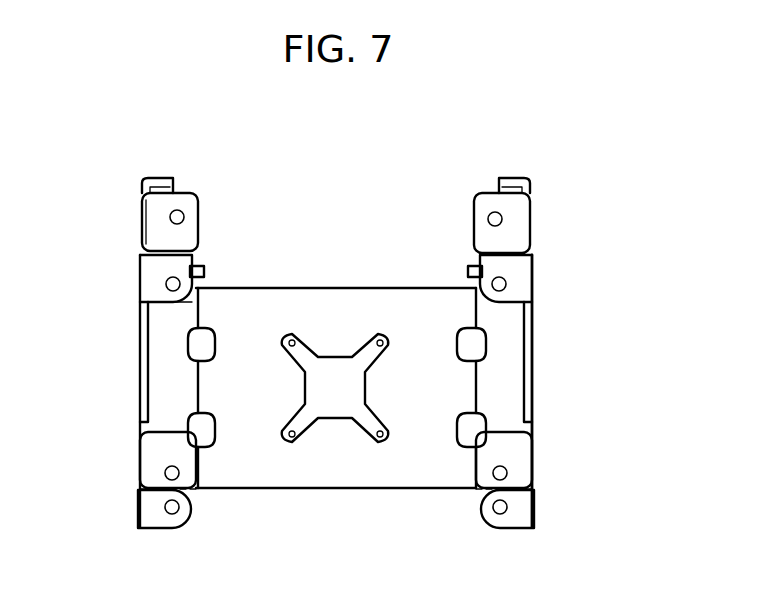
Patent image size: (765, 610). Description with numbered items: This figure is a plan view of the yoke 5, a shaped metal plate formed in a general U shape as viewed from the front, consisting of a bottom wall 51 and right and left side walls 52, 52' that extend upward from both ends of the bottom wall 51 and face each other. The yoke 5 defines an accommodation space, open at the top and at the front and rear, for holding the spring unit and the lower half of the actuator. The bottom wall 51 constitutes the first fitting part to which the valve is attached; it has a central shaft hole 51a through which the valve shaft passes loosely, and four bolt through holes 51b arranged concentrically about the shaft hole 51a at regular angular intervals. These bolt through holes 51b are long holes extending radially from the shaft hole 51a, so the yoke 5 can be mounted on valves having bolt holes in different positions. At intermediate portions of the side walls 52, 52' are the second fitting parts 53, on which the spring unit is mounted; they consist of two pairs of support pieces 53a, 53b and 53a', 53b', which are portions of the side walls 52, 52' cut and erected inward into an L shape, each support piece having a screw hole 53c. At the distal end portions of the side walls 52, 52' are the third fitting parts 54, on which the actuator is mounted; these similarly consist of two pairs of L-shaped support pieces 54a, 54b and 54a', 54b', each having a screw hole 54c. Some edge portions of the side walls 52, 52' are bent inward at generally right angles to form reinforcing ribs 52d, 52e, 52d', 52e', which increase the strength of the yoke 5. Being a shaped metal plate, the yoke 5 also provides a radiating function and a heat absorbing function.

The yoke 5 is at (139, 331).
The bottom wall 51 is at (425, 462).
The shaft hole 51a is at (336, 405).
The bolt through holes 51b is at (376, 345).
The side wall 52 is at (102, 391).
The side wall 52' is at (573, 391).
The reinforcing rib 52d is at (161, 157).
The reinforcing rib 52d' is at (523, 157).
The reinforcing rib 52e is at (239, 262).
The reinforcing rib 52e' is at (444, 240).
The second fitting part 53 is at (183, 263).
The support piece 53a is at (123, 508).
The support piece 53a' is at (552, 508).
The support piece 53b is at (122, 273).
The support piece 53b' is at (551, 275).
The screw hole 53c is at (166, 284).
The third fitting part 54 is at (193, 191).
The support piece 54a is at (122, 450).
The support piece 54a' is at (552, 452).
The support piece 54b is at (104, 222).
The support piece 54b' is at (553, 223).
The screw hole 54c is at (171, 214).